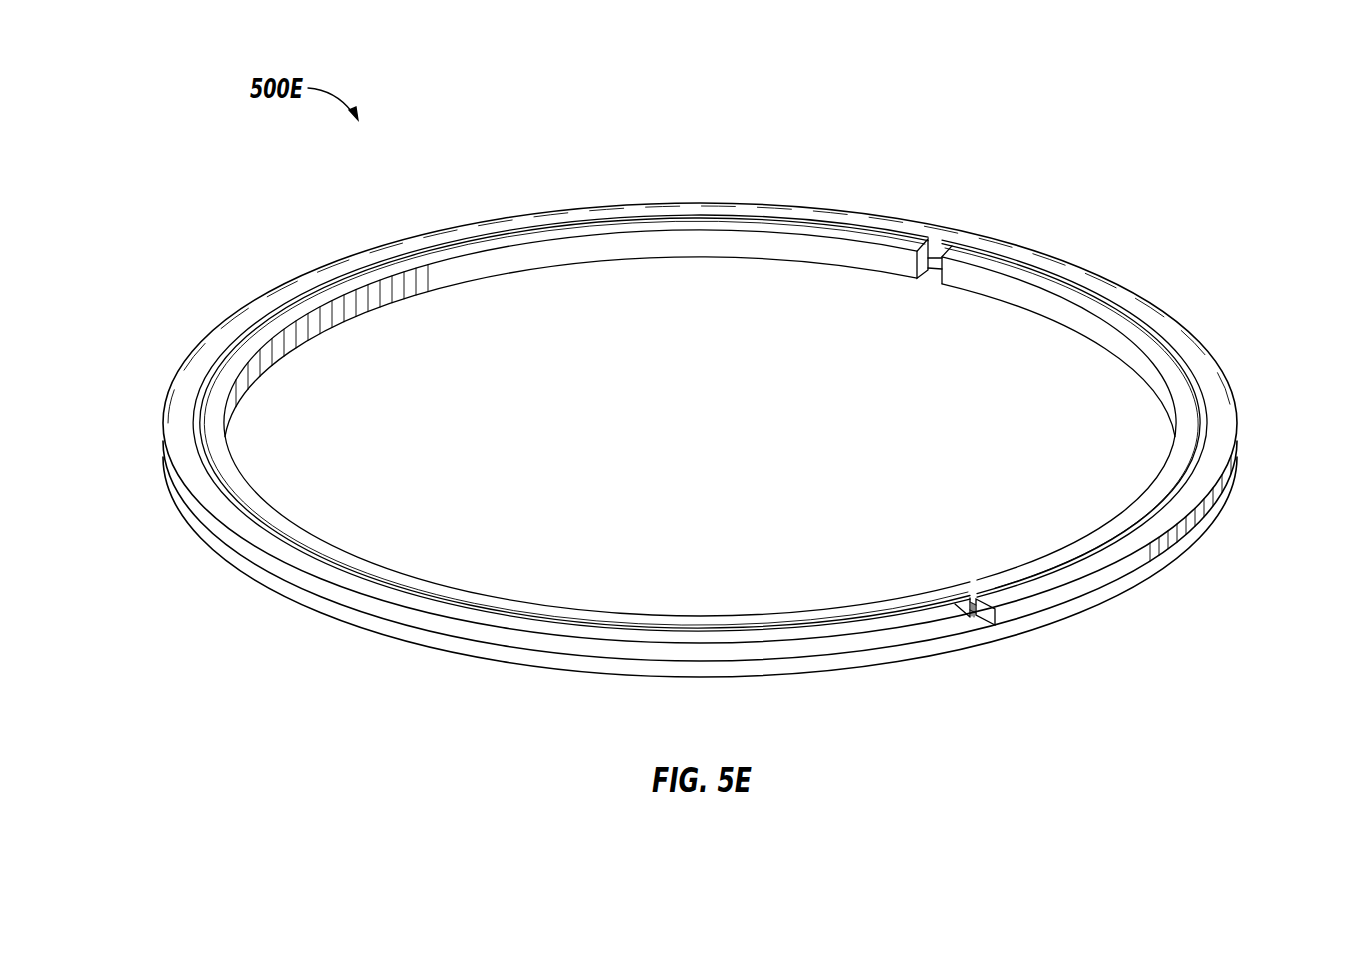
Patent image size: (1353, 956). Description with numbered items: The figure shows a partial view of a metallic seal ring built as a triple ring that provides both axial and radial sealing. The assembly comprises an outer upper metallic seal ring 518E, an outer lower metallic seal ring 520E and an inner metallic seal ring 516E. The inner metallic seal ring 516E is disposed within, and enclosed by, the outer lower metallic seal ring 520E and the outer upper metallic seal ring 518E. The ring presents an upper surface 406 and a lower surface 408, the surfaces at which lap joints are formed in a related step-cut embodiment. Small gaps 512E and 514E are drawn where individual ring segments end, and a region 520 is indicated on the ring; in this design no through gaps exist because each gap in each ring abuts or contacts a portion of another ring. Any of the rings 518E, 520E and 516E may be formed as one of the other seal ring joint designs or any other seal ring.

The surface 406 is at (297, 268).
The surface 408 is at (349, 631).
The gap 512E is at (930, 290).
The gap 514E is at (968, 595).
The inner metallic seal ring 516E is at (860, 232).
The outer upper metallic seal ring 518E is at (1038, 265).
The inner surface 520 is at (1062, 316).
The outer lower metallic seal ring 520E is at (1043, 622).